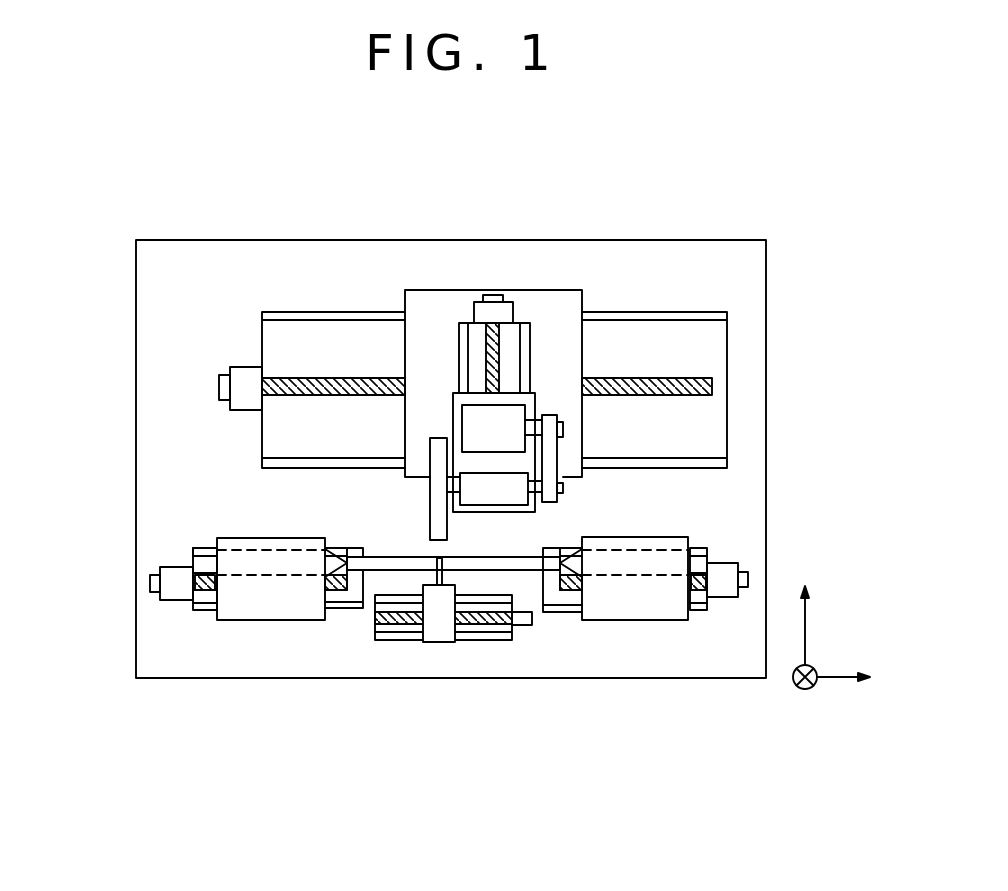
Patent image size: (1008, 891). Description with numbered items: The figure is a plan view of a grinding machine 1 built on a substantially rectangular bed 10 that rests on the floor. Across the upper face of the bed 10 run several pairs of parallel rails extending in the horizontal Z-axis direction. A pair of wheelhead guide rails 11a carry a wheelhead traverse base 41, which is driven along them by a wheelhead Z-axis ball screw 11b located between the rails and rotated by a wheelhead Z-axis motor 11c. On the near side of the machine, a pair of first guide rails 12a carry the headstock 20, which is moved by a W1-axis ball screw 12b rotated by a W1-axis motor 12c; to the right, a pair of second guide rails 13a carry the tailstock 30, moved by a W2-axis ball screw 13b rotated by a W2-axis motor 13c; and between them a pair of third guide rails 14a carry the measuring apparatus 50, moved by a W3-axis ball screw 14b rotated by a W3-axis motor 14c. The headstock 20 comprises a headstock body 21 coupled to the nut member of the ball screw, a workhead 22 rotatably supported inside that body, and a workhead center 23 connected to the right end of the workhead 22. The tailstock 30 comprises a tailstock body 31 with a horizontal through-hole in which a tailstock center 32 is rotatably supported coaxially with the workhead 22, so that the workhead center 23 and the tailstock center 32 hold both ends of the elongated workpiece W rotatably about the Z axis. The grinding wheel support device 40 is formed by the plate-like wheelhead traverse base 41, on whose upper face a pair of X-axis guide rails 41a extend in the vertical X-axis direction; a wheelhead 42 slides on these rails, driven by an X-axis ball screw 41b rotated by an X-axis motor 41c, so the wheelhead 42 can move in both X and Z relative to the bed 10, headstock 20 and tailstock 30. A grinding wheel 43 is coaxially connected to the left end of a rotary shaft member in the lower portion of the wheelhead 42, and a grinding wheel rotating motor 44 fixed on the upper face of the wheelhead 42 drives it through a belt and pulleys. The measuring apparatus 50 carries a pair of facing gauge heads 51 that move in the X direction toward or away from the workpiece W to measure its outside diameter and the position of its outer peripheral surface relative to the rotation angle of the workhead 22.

The grinding machine 1 is at (796, 212).
The bed 10 is at (678, 254).
The wheelhead guide rails 11a is at (727, 312).
The wheelhead Z-axis ball screw 11b is at (694, 380).
The wheelhead Z-axis motor 11c is at (222, 372).
The first guide rails 12a is at (197, 548).
The W1-axis ball screw 12b is at (202, 575).
The W1-axis motor 12c is at (167, 600).
The second guide rails 13a is at (700, 548).
The W2-axis ball screw 13b is at (698, 562).
The W2-axis motor 13c is at (735, 563).
The third guide rails 14a is at (385, 640).
The W3-axis ball screw 14b is at (403, 640).
The W3-axis motor 14c is at (512, 643).
The headstock 20 is at (175, 752).
The headstock body 21 is at (232, 620).
The workhead 22 is at (258, 577).
The workhead center 23 is at (337, 620).
The tailstock 30 is at (610, 750).
The tailstock body 31 is at (672, 620).
The tailstock center 32 is at (570, 612).
The grinding wheel support device 40 is at (386, 288).
The wheelhead traverse base 41 is at (425, 312).
The X-axis guide rails 41a is at (456, 324).
The X-axis ball screw 41b is at (501, 332).
The X-axis motor 41c is at (491, 295).
The wheelhead 42 is at (452, 411).
The grinding wheel 43 is at (425, 450).
The grinding wheel rotating motor 44 is at (517, 412).
The measuring apparatus 50 is at (443, 625).
The gauge heads 51 is at (453, 573).
The workpiece W is at (390, 555).